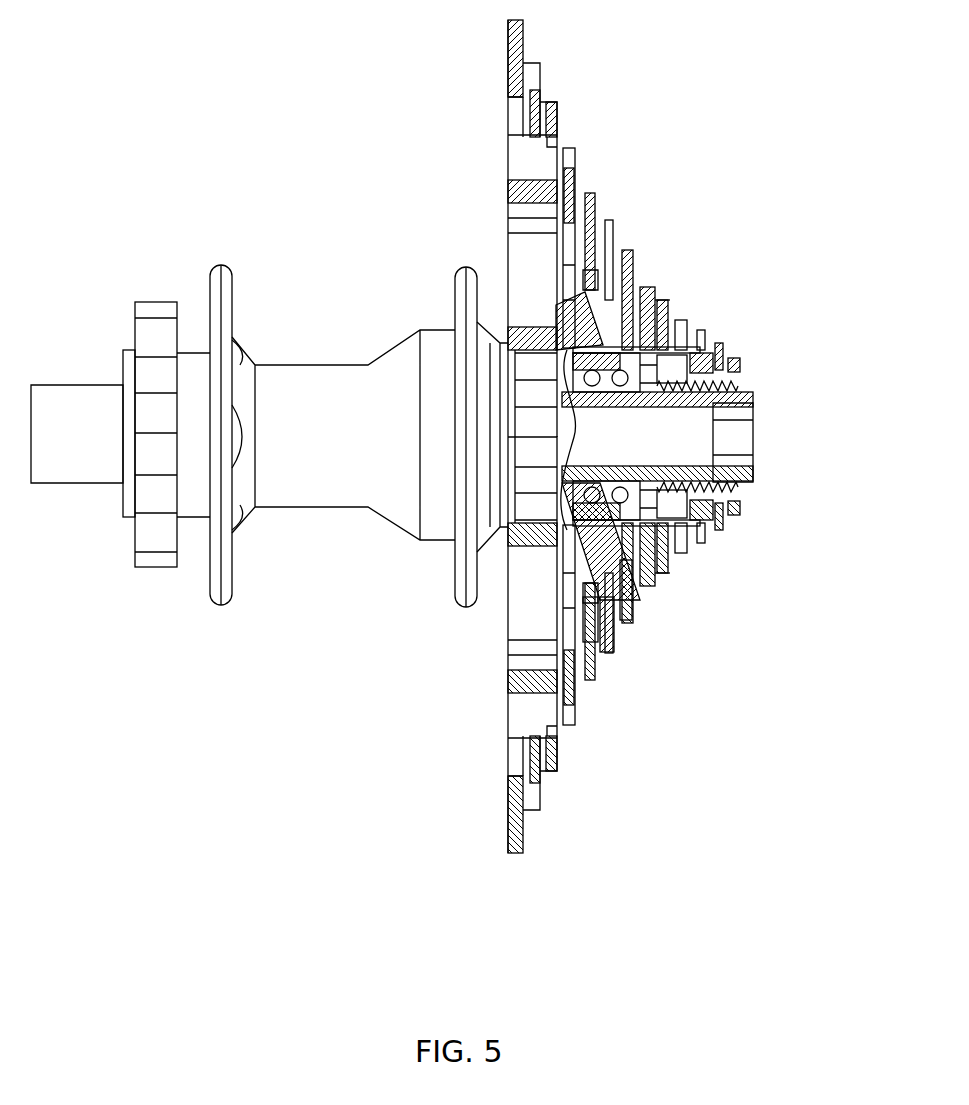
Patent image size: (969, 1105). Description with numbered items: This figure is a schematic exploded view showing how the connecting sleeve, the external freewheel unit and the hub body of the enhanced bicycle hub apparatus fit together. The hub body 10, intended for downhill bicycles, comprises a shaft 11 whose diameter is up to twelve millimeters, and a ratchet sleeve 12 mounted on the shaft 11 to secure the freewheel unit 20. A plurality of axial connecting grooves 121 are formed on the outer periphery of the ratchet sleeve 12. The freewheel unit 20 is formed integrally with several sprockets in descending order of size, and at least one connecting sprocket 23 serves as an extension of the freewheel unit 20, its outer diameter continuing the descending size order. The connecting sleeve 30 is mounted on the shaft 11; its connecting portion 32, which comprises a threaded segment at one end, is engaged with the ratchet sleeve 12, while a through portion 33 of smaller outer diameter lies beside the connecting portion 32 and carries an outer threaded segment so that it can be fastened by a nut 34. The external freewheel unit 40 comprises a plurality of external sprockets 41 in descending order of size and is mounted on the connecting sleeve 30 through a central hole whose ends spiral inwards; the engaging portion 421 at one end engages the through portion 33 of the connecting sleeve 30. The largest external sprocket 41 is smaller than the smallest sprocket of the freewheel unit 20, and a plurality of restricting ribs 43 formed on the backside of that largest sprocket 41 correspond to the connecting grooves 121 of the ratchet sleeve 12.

The hub body 10 is at (307, 288).
The shaft 11 is at (753, 395).
The ratchet sleeve 12 is at (613, 555).
The connecting grooves 121 is at (528, 485).
The freewheel unit 20 is at (600, 160).
The connecting sprocket 23 is at (636, 330).
The connecting sleeve 30 is at (746, 496).
The connecting portion 32 is at (643, 520).
The through portion 33 is at (740, 388).
The nut 34 is at (740, 372).
The external freewheel unit 40 is at (719, 320).
The external sprockets 41 is at (662, 335).
The restricting ribs 43 is at (652, 345).
The engaging portion 421 is at (727, 357).